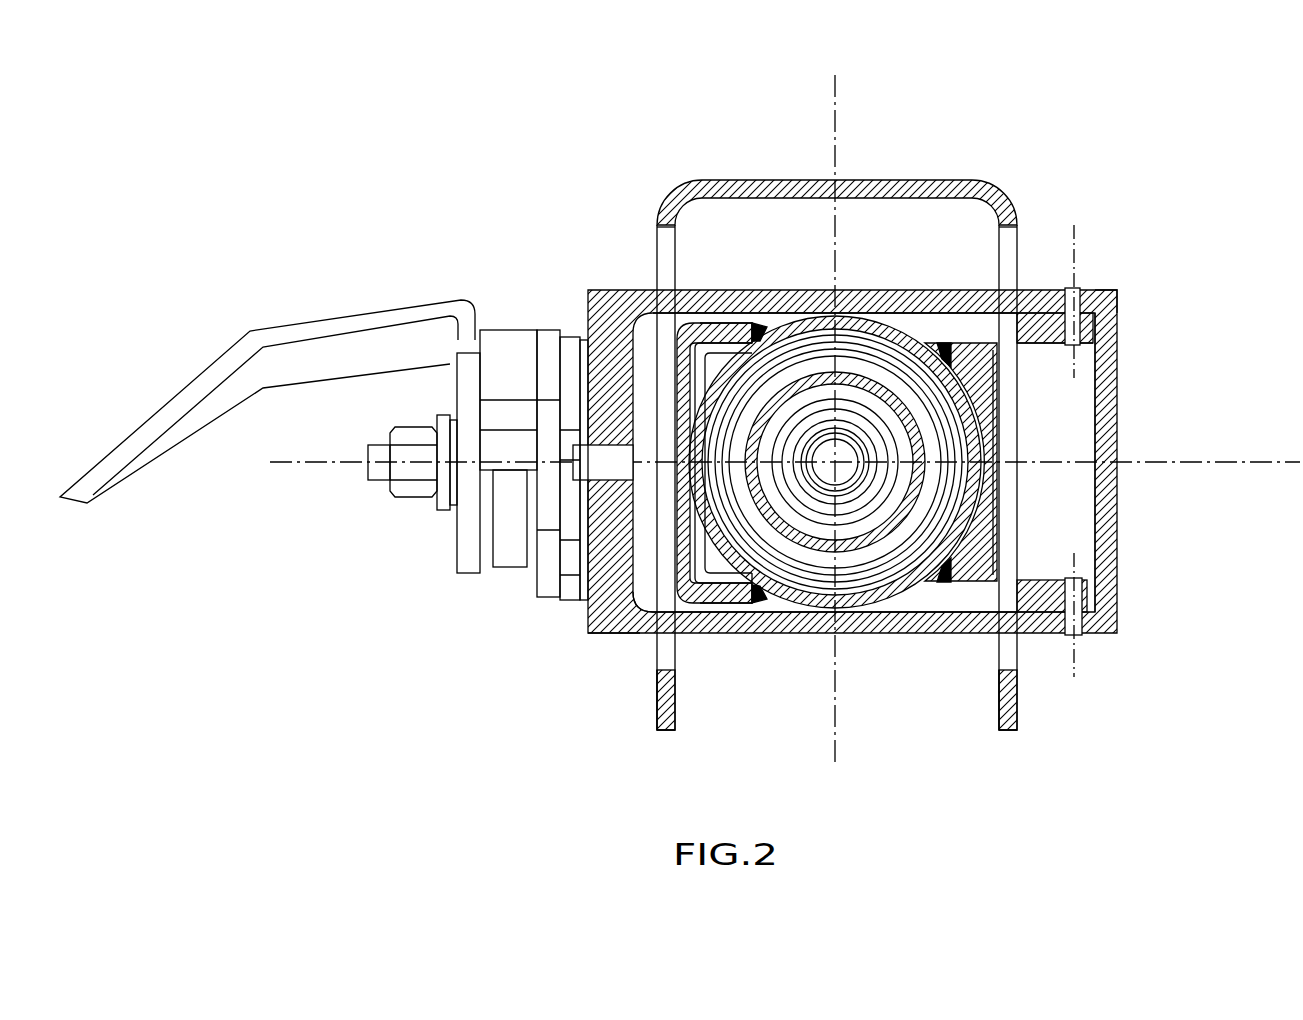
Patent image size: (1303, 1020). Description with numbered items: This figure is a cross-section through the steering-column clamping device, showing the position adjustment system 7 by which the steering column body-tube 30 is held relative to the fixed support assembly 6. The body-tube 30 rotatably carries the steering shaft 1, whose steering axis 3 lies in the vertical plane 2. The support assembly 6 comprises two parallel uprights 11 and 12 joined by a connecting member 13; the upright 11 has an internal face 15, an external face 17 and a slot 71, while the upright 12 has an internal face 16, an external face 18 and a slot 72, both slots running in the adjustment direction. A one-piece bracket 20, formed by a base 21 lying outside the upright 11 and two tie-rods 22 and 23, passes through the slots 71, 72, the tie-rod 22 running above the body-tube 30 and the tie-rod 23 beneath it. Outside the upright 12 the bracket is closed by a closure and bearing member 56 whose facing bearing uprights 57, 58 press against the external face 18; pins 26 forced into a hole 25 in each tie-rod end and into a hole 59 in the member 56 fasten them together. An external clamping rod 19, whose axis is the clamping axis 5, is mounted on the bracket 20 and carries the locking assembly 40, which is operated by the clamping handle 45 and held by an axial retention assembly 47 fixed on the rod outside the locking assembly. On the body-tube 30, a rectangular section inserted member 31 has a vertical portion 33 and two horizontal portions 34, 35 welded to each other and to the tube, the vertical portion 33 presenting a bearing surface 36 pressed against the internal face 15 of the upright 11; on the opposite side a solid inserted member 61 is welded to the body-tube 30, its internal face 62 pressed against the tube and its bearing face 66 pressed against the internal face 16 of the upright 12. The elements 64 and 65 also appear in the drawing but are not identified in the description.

The steering shaft 1 is at (884, 444).
The vertical plane 2 is at (834, 100).
The steering axis 3 is at (939, 469).
The clamping axis 5 is at (1248, 450).
The support assembly 6 is at (832, 450).
The position adjustment system 7 is at (832, 370).
The upright 11 is at (665, 735).
The upright 12 is at (1008, 735).
The connecting member 13 is at (778, 180).
The internal face 15 is at (677, 718).
The internal face 16 is at (999, 712).
The external face 17 is at (657, 712).
The external face 18 is at (1017, 720).
The external clamping rod 19 is at (582, 440).
The bracket 20 is at (610, 284).
The base 21 is at (612, 615).
The tie-rod 22 is at (862, 290).
The tie-rod 23 is at (878, 622).
The hole 25 is at (1120, 300).
The pins 26 is at (1087, 307).
The body-tube 30 is at (778, 602).
The rectangular section inserted member 31 is at (663, 595).
The vertical portion 33 is at (652, 524).
The horizontal portion 34 is at (723, 330).
The horizontal portion 35 is at (745, 600).
The bearing surface 36 is at (611, 460).
The locking assembly 40 is at (466, 409).
The clamping handle 45 is at (346, 320).
The axial retention assembly 47 is at (410, 500).
The closure and bearing member 56 is at (1107, 537).
The bearing upright 57 is at (1109, 279).
The bearing upright 58 is at (1040, 615).
The hole 59 is at (1120, 330).
The solid inserted member 61 is at (965, 582).
The internal face 62 is at (908, 353).
The seat block 64 is at (1065, 398).
The lower seal 65 is at (930, 600).
The bearing face 66 is at (997, 483).
The slot 71 is at (660, 262).
The slot 72 is at (1010, 250).